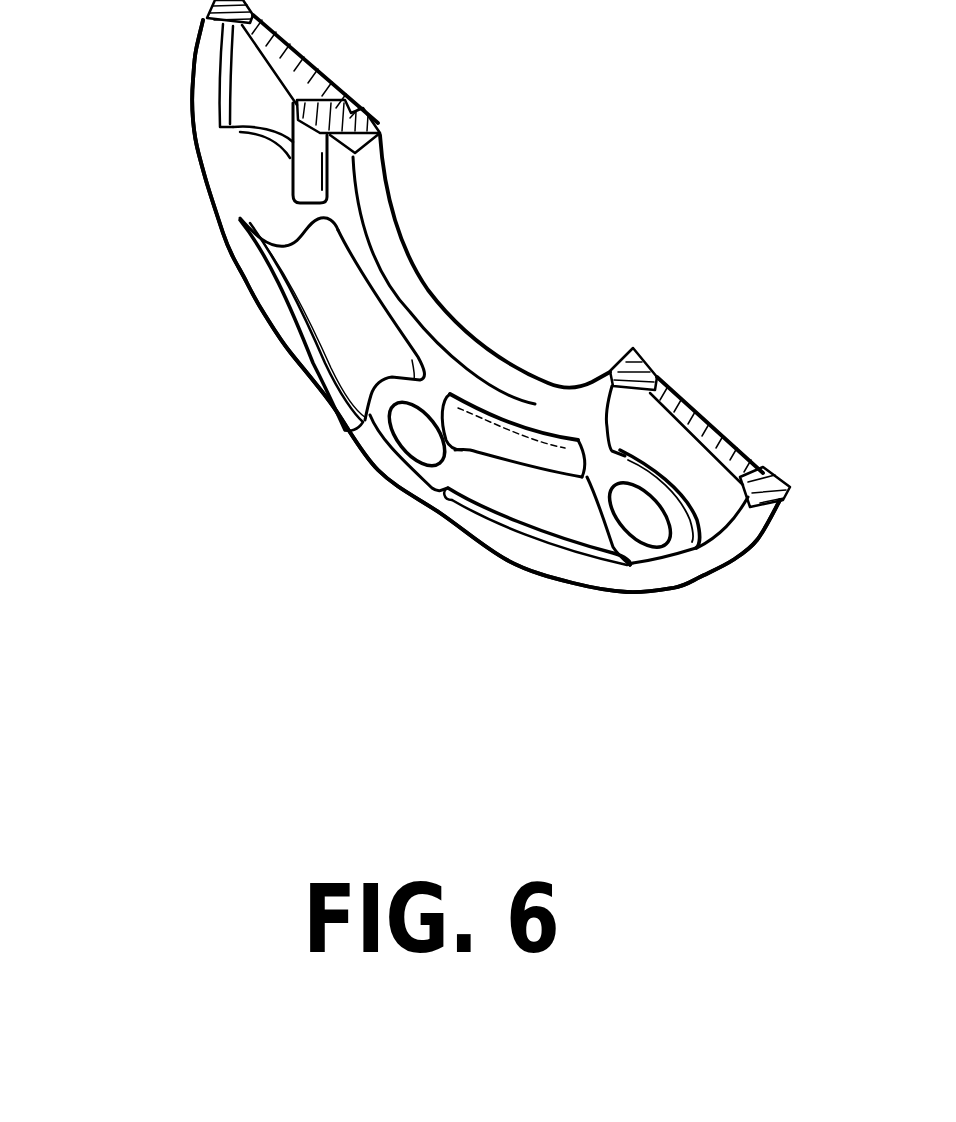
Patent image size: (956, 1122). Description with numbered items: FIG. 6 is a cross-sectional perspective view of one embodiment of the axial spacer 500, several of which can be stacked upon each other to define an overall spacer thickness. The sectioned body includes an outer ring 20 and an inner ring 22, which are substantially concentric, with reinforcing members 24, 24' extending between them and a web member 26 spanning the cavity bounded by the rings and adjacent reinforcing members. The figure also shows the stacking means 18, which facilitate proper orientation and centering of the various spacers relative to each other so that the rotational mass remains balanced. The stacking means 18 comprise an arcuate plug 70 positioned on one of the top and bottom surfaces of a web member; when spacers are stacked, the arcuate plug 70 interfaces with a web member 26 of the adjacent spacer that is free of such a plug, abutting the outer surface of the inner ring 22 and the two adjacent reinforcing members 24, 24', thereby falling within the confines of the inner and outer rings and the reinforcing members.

The axial spacer 500 is at (652, 116).
The outer ring 20 is at (190, 112).
The inner ring 22 is at (380, 128).
The arcuate plug 70 is at (312, 170).
The web member 26 is at (332, 307).
The stacking means 18 is at (552, 395).
The reinforcing member 24 is at (383, 490).
The reinforcing member 24' is at (643, 576).